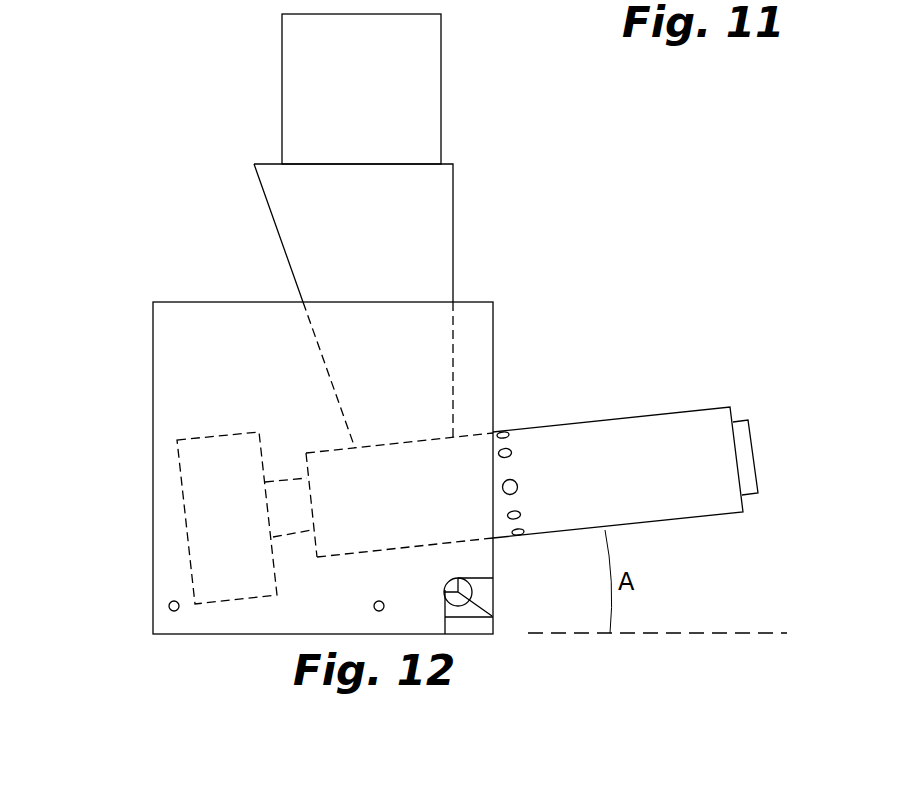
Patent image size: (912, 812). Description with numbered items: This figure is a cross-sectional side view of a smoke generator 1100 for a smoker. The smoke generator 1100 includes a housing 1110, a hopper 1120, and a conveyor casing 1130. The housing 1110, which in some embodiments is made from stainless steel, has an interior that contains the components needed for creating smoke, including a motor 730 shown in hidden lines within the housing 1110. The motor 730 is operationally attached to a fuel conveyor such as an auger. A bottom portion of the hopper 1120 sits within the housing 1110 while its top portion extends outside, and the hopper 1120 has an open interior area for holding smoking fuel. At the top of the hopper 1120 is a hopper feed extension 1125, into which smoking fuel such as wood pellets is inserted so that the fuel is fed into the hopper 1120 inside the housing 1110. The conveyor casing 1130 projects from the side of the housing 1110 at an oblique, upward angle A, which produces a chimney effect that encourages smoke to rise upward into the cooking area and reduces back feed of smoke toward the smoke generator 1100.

The smoke generator 1100 is at (178, 248).
The hopper feed extension 1125 is at (307, 69).
The hopper 1120 is at (437, 240).
The housing 1110 is at (153, 393).
The motor 730 is at (215, 527).
The conveyor casing 1130 is at (698, 388).